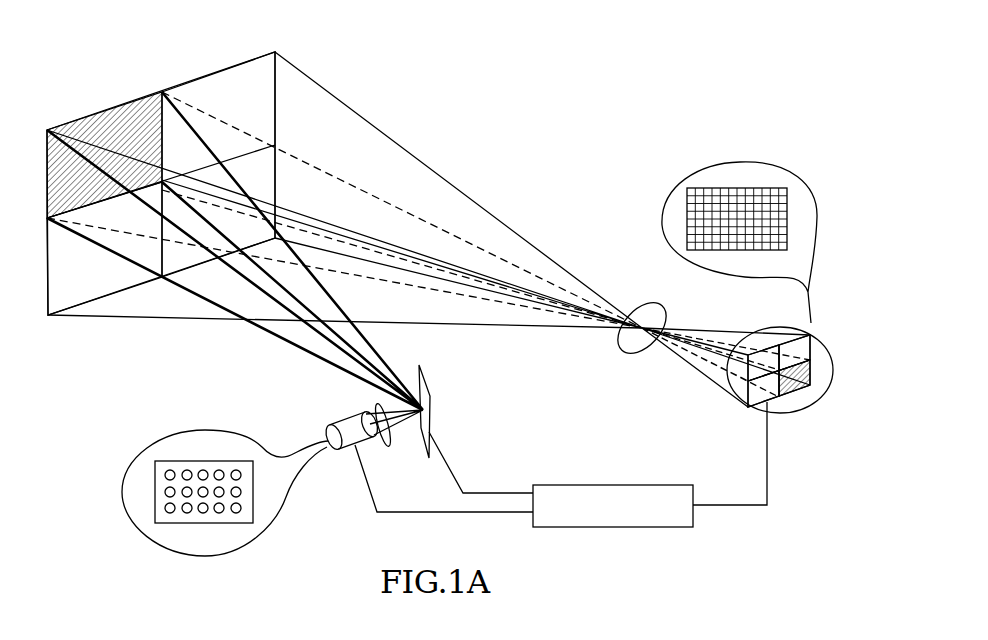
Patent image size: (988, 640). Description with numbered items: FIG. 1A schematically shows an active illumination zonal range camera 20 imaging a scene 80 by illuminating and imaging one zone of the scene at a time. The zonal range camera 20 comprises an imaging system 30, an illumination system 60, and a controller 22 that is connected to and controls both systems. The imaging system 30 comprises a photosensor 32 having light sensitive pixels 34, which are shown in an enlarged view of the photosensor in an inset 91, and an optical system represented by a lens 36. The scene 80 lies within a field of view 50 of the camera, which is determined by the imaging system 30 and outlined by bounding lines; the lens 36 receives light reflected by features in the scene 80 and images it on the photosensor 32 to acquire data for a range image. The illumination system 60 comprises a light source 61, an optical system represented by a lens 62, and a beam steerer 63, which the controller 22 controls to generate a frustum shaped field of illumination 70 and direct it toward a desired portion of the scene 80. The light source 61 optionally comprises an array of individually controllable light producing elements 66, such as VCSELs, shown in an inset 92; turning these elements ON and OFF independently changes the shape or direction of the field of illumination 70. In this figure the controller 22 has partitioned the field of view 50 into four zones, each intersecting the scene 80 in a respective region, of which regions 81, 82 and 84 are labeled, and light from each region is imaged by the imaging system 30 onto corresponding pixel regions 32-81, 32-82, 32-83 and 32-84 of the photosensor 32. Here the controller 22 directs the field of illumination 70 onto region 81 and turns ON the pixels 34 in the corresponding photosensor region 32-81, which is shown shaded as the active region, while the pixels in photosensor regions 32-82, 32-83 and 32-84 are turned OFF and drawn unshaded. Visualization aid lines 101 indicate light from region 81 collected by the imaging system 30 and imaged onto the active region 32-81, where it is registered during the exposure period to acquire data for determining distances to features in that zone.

The zonal range camera 20 is at (637, 538).
The controller 22 is at (588, 484).
The imaging system 30 is at (673, 364).
The photosensor 32 is at (678, 215).
The photosensor region 32-81 is at (792, 393).
The photosensor region 32-82 is at (733, 403).
The photosensor region 32-83 is at (772, 360).
The photosensor region 32-84 is at (795, 347).
The light sensitive pixels 34 is at (753, 203).
The lens 36 is at (657, 300).
The field of view 50 is at (537, 247).
The illumination system 60 is at (233, 417).
The light source 61 is at (348, 420).
The lens 62 is at (387, 440).
The beam steerer 63 is at (427, 388).
The light producing elements 66 is at (165, 508).
The field of illumination 70 is at (268, 292).
The scene 80 is at (147, 57).
The region of scene 81 is at (75, 163).
The region of scene 82 is at (267, 90).
The region of scene 84 is at (80, 283).
The inset 91 is at (762, 162).
The inset 92 is at (187, 555).
The visualization aid lines 101 is at (207, 197).